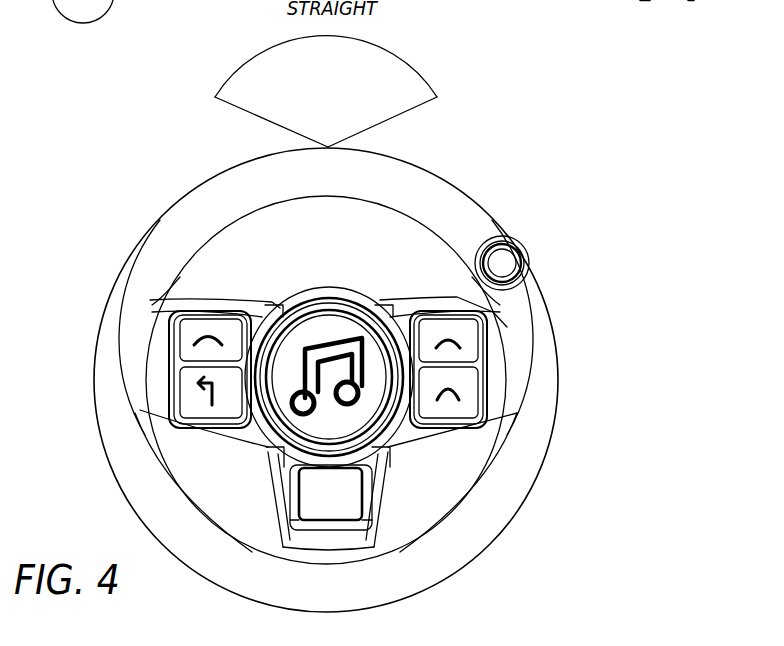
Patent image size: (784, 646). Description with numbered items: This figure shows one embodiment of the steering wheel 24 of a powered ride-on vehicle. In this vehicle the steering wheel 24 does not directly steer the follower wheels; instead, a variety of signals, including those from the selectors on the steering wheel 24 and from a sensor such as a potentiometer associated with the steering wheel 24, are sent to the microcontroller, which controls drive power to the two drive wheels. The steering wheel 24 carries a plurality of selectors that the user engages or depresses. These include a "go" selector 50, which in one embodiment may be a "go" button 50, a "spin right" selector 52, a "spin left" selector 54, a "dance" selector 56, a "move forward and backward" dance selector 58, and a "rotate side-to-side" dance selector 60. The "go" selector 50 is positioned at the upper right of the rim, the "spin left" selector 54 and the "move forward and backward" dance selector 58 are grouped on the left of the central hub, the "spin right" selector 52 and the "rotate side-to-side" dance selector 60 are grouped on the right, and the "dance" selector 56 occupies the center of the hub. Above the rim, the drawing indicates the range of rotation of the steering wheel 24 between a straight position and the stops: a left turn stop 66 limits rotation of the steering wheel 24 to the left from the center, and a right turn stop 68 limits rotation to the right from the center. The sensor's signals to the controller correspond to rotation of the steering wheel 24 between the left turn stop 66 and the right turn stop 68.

The steering wheel 24 is at (482, 550).
The "go" selector 50 is at (500, 263).
The "spin right" selector 52 is at (462, 348).
The "spin left" selector 54 is at (185, 337).
The "dance" selector 56 is at (365, 403).
The "move forward and backward" dance selector 58 is at (183, 390).
The "rotate side-to-side" dance selector 60 is at (470, 385).
The left turn stop 66 is at (233, 106).
The right turn stop 68 is at (412, 111).